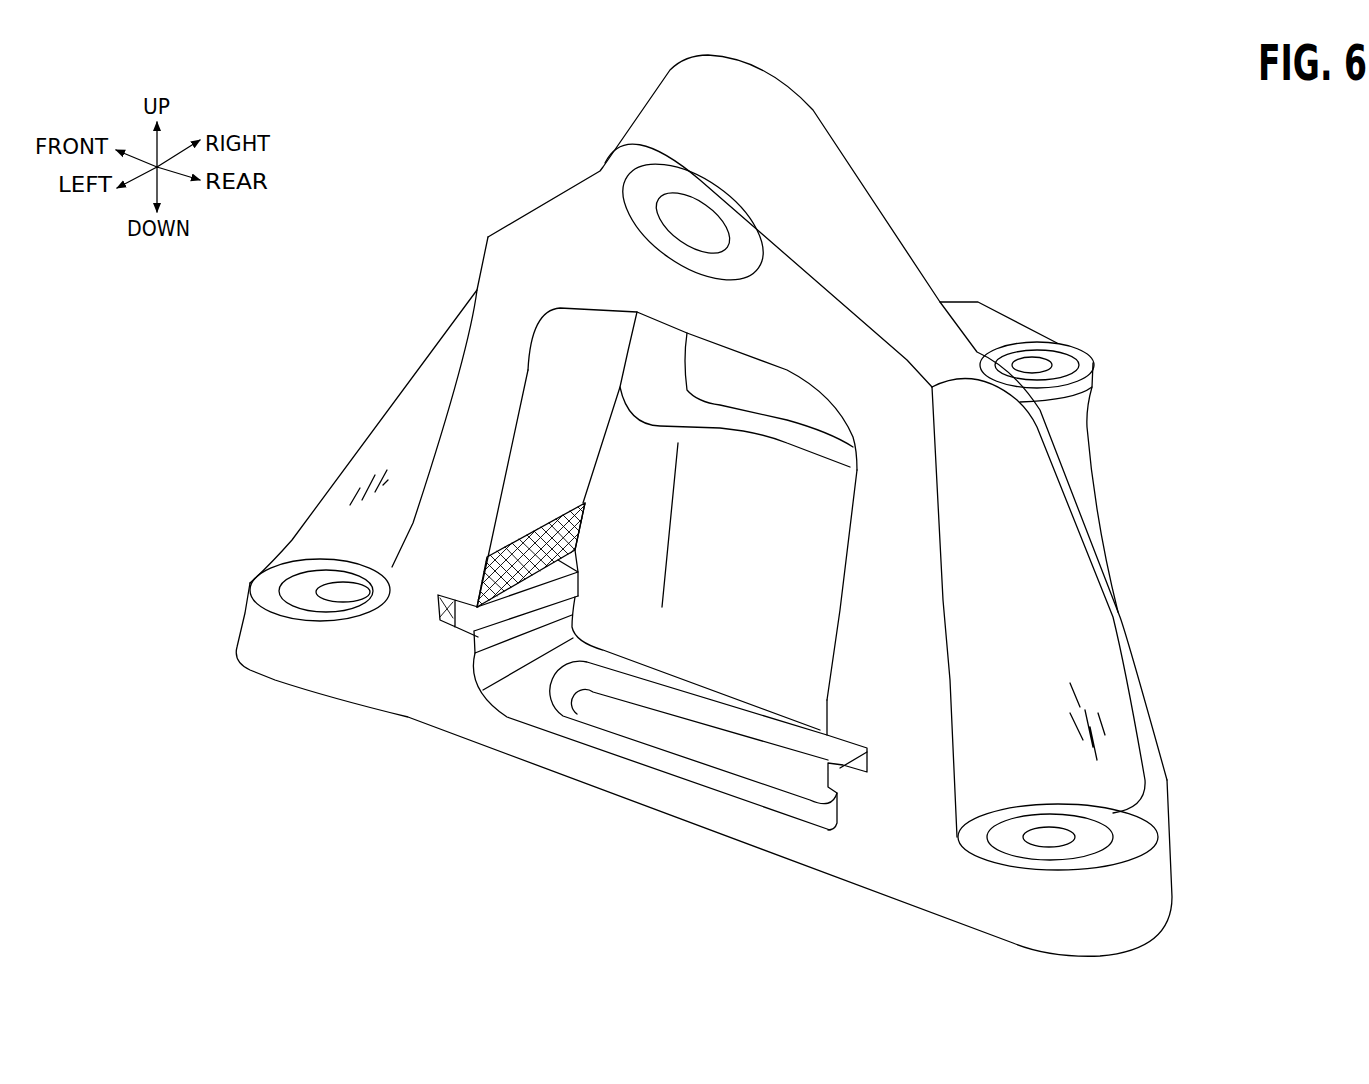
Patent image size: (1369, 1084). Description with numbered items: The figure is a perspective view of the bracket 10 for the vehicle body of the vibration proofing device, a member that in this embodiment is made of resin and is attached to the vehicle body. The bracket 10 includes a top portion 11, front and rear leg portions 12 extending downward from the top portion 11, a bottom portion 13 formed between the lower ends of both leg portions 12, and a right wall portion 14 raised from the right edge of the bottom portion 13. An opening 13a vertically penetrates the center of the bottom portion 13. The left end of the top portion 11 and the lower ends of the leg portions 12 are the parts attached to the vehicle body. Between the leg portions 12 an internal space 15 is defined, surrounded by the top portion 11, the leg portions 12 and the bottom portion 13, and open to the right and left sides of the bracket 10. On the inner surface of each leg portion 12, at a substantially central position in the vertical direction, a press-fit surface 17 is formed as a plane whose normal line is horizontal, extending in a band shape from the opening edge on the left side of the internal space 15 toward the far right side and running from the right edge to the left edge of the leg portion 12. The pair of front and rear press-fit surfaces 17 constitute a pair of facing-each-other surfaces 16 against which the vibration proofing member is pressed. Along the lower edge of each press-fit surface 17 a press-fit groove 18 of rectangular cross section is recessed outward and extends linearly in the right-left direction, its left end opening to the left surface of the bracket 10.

The bracket 10 is at (583, 141).
The top portion 11 is at (837, 203).
The leg portions 12 is at (400, 433).
The bottom portion 13 is at (573, 758).
The opening 13a is at (615, 717).
The right wall portion 14 is at (767, 653).
The internal space 15 is at (570, 357).
The facing-each-other surfaces 16 is at (663, 719).
The press-fit surface 17 is at (535, 575).
The press-fit groove 18 is at (456, 623).